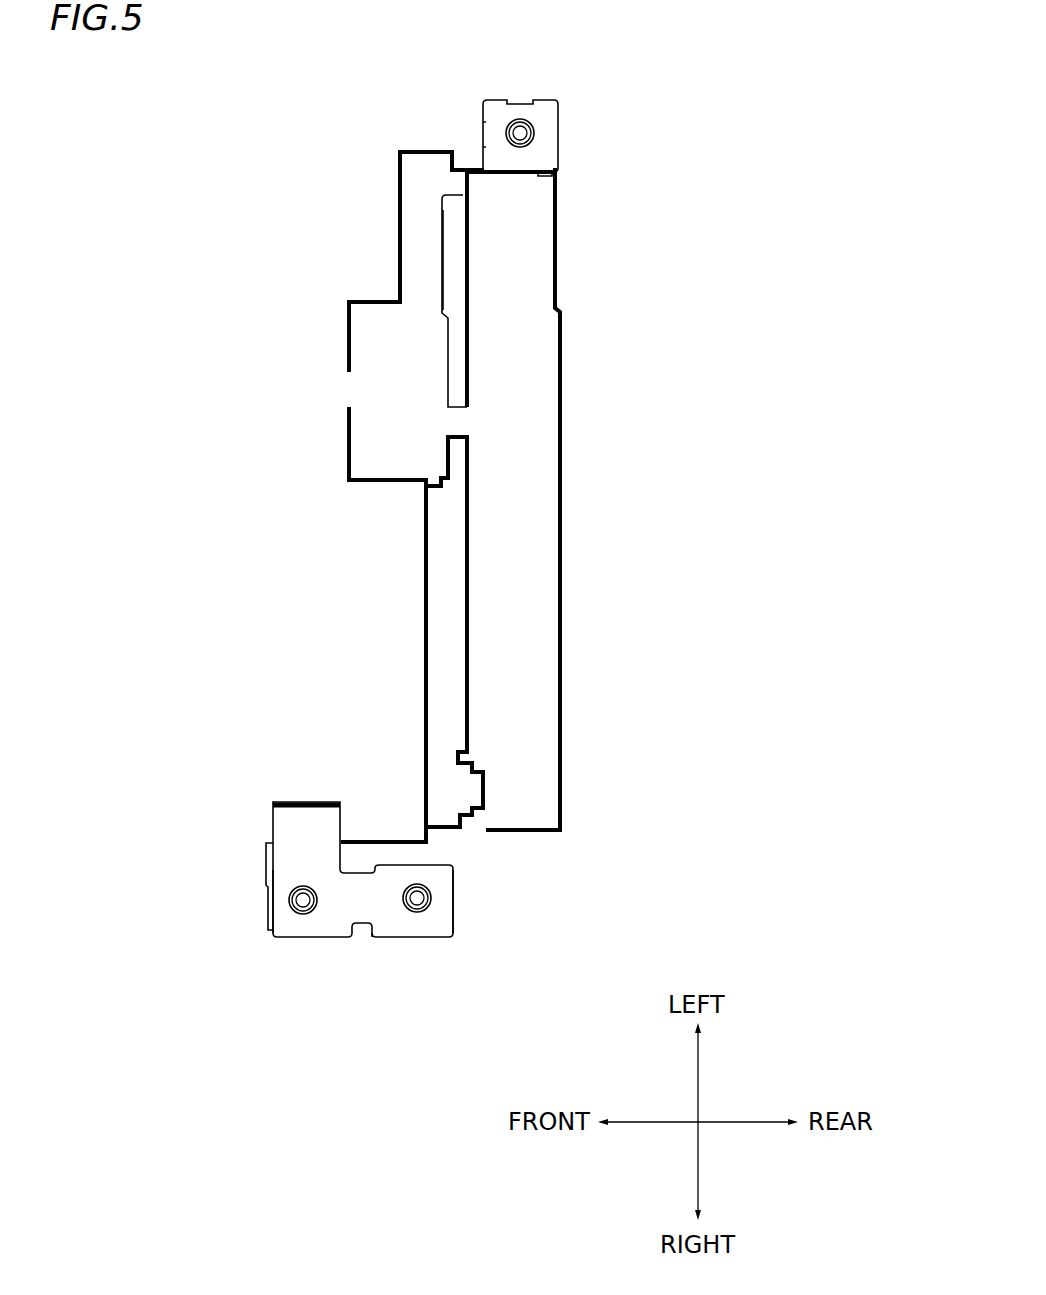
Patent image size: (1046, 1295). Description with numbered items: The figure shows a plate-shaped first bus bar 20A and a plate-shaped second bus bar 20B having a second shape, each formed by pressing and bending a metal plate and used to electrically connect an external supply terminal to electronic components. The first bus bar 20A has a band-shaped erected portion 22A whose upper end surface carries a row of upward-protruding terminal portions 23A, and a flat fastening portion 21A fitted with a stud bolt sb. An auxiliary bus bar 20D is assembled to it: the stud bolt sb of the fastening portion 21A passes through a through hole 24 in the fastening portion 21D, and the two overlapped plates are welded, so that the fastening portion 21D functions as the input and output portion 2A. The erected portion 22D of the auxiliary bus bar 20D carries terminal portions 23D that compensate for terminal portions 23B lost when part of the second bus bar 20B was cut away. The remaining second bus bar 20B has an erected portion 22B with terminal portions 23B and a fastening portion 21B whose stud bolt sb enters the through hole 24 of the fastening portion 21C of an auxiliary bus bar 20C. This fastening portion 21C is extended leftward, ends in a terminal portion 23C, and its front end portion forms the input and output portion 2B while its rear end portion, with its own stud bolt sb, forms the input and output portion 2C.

The input and output portion 2A is at (565, 94).
The input and output portion 2B is at (300, 940).
The input and output portion 2C is at (417, 940).
The stud bolt sb is at (521, 122).
The through hole 24 is at (510, 134).
The first bus bar 20A is at (515, 491).
The second bus bar 20B is at (395, 638).
The auxiliary bus bar 20C is at (385, 889).
The auxiliary bus bar 20D is at (490, 213).
The fastening portion 21A is at (542, 117).
The fastening portion 21B is at (268, 856).
The fastening portion 21C is at (288, 922).
The fastening portion 21D is at (548, 155).
The erected portion 22A is at (397, 180).
The erected portion 22B is at (424, 626).
The erected portion 22D is at (471, 263).
The terminal portion 23A is at (398, 262).
The terminal portion 23B is at (424, 572).
The terminal portion 23C is at (306, 802).
The terminal portion 23D is at (470, 326).